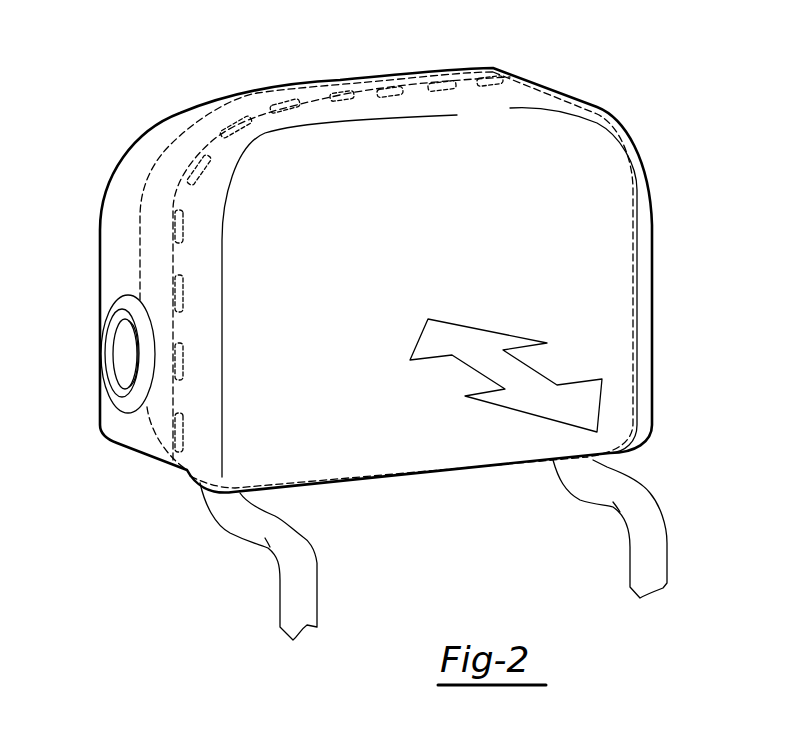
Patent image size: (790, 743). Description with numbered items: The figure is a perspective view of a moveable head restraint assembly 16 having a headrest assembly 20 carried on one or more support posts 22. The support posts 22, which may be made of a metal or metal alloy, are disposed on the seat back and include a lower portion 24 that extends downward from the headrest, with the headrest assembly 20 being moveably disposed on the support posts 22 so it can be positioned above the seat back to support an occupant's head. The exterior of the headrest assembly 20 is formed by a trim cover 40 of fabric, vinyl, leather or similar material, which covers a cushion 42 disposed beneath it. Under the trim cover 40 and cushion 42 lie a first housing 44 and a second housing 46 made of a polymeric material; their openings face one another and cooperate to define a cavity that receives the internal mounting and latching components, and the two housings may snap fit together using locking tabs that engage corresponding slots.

The head restraint assembly 16 is at (385, 252).
The headrest assembly 20 is at (530, 80).
The support posts 22 is at (647, 507).
The lower portion 24 is at (637, 543).
The trim cover 40 is at (140, 147).
The cushion 42 is at (130, 255).
The first housing 44 is at (553, 96).
The second housing 46 is at (191, 126).